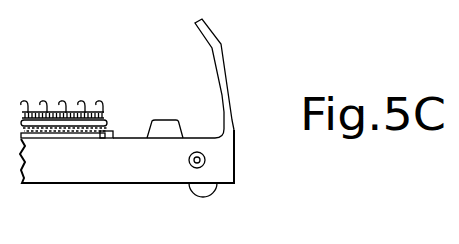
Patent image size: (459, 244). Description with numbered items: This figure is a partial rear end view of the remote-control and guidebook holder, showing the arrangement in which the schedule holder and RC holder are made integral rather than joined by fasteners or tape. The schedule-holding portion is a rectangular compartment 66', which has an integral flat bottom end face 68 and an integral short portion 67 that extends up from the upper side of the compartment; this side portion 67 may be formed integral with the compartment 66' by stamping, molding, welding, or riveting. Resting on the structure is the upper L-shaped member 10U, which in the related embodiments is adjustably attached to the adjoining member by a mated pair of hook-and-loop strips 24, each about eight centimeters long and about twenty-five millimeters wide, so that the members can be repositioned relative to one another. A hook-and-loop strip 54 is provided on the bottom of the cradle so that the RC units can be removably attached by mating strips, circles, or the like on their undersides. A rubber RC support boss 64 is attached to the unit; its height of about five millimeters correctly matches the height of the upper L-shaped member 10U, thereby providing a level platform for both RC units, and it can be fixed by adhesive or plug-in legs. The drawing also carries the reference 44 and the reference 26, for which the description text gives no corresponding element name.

The H&L strip 54 is at (70, 111).
The upper L-shaped member 10U is at (106, 122).
The integral short portion 67 is at (218, 52).
The RC support boss 64 is at (178, 120).
The pivot 44 is at (203, 155).
The rectangular compartment 66' is at (285, 153).
The H&L strips 24 is at (62, 137).
The flat bottom end face 68 is at (123, 170).
The wheel 26 is at (193, 191).